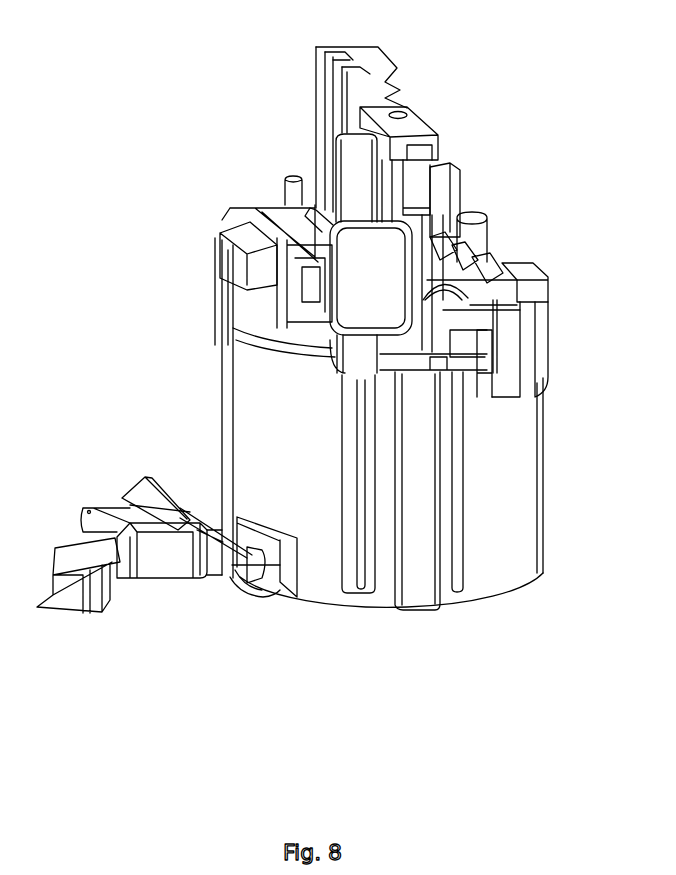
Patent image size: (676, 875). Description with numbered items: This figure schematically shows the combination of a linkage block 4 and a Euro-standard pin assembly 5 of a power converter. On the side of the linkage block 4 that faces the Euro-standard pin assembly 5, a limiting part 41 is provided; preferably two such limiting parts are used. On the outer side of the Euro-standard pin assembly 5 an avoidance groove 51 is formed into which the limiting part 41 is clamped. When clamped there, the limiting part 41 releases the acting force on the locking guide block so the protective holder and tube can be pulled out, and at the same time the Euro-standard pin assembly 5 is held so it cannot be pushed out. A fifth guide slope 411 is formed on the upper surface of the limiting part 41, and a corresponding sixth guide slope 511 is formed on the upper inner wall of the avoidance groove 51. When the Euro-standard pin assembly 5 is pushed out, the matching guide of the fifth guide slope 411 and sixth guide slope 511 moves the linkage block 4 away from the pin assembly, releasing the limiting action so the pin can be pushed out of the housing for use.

The Euro-standard pin assembly 5 is at (293, 159).
The linkage block 4 is at (108, 498).
The limiting part 41 is at (204, 577).
The fifth guide slope 411 is at (223, 571).
The avoidance groove 51 is at (280, 588).
The sixth guide slope 511 is at (293, 550).